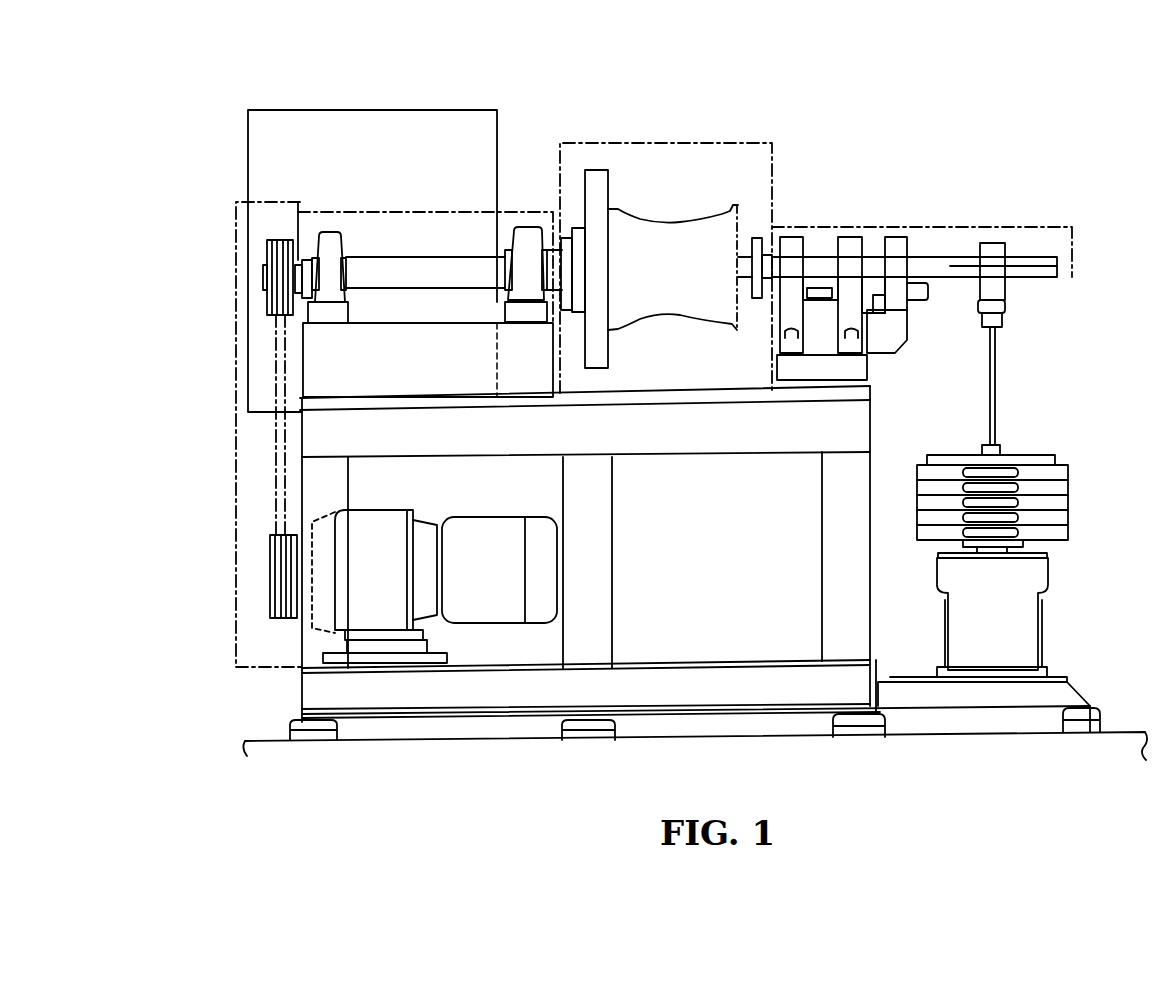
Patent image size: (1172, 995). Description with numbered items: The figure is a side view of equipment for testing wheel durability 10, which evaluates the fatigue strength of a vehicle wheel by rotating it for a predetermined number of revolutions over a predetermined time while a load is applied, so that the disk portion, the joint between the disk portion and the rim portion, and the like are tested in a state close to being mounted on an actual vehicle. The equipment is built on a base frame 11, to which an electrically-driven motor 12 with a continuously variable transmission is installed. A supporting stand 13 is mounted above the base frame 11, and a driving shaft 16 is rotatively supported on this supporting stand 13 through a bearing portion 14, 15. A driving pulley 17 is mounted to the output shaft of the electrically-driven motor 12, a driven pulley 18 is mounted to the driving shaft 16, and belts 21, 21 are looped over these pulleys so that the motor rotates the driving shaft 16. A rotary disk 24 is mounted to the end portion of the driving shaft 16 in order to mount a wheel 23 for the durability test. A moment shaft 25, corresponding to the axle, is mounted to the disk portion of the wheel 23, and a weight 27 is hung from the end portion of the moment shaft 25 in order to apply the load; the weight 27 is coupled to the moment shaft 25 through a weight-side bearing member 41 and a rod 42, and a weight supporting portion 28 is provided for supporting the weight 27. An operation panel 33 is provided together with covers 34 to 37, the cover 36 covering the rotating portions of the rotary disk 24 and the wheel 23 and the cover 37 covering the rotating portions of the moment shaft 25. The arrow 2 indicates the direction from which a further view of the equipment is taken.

The equipment for testing wheel durability 10 is at (183, 109).
The base frame 11 is at (391, 731).
The electrically-driven motor 12 is at (472, 623).
The supporting stand 13 is at (303, 380).
The bearing portion 14 is at (326, 232).
The bearing portion 15 is at (527, 227).
The driving shaft 16 is at (395, 257).
The driving pulley 17 is at (272, 588).
The driven pulley 18 is at (266, 257).
The belt 21 is at (285, 484).
The wheel 23 is at (650, 212).
The rotary disk 24 is at (598, 170).
The moment shaft 25 is at (820, 227).
The weight 27 is at (1068, 507).
The weight supporting portion 28 is at (1040, 620).
The operation panel 33 is at (343, 110).
The cover 34 is at (237, 343).
The cover 35 is at (450, 212).
The cover 36 is at (692, 143).
The cover 37 is at (952, 227).
The weight-side bearing member 41 is at (993, 240).
The rod 42 is at (997, 357).
The arrow 2 is at (1127, 431).